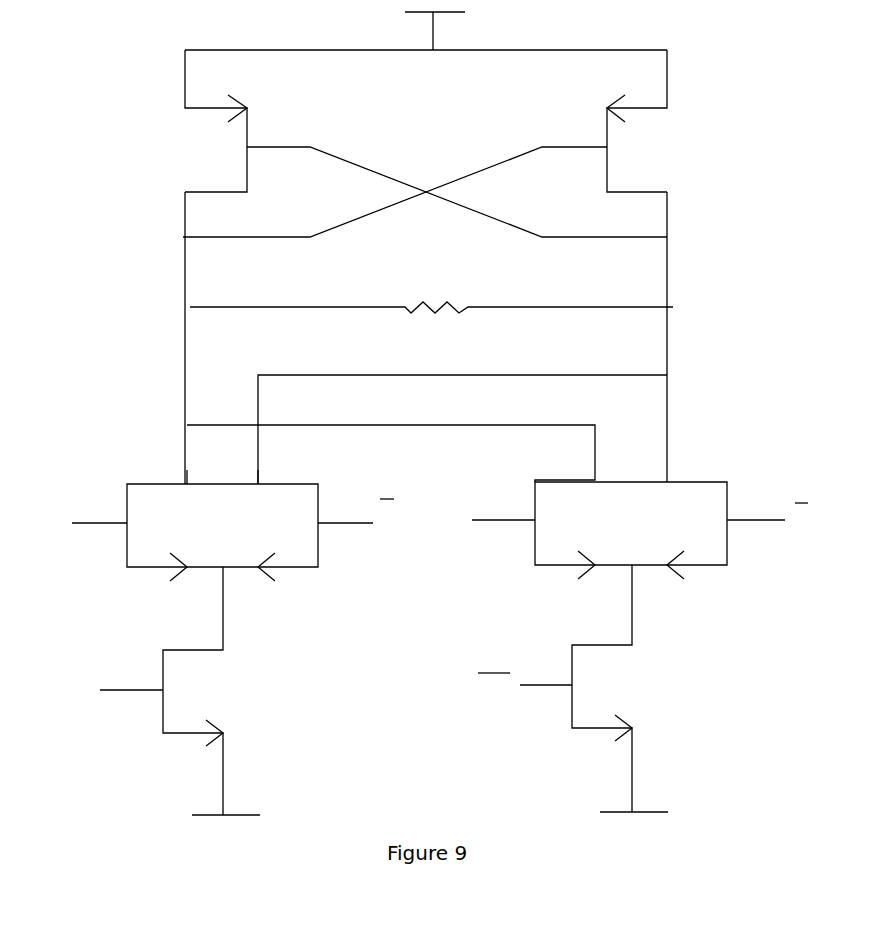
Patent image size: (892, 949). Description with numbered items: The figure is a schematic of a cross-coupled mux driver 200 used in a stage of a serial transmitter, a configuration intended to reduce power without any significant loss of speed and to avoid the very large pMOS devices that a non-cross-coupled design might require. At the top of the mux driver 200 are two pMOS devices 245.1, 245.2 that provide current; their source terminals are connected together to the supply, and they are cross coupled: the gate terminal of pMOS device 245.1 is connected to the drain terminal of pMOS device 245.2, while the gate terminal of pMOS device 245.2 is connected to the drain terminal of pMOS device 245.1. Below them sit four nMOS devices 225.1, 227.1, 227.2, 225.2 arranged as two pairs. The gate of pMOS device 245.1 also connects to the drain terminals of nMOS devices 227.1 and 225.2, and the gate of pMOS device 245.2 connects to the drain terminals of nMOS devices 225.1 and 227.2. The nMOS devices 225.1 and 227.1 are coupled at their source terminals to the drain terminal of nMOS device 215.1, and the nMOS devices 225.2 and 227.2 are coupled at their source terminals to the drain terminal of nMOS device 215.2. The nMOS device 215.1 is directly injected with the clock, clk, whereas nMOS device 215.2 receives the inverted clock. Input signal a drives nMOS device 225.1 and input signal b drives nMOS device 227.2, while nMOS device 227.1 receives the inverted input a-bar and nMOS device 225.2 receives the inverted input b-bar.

The mux driver 200 is at (430, 357).
The pMOS device 245.1 is at (206, 121).
The pMOS device 245.2 is at (643, 121).
The nMOS device 225.1 is at (175, 525).
The nMOS device 227.1 is at (270, 525).
The nMOS device 227.2 is at (583, 530).
The nMOS device 225.2 is at (679, 530).
The nMOS device 215.1 is at (211, 691).
The nMOS device 215.2 is at (620, 688).